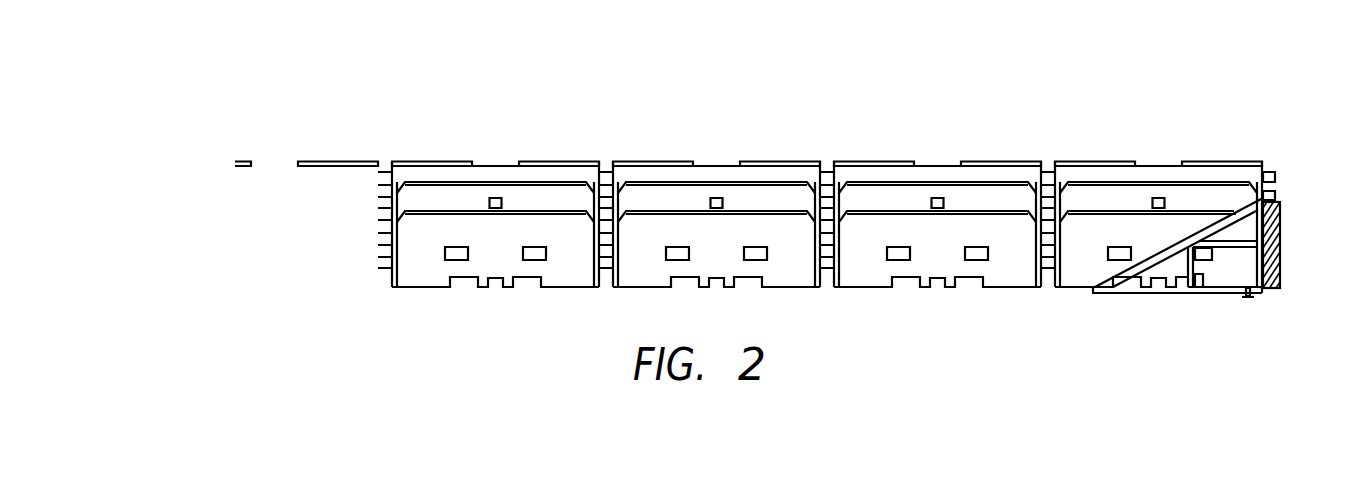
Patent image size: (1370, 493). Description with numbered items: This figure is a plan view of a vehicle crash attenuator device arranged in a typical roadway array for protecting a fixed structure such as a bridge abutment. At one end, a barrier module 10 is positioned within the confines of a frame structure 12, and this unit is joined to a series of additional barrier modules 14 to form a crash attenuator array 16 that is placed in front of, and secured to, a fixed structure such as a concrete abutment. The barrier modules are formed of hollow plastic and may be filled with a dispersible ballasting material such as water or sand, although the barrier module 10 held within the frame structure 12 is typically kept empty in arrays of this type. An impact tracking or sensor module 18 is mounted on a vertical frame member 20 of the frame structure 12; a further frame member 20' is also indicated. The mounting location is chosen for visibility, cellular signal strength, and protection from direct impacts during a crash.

The barrier module 10 is at (1192, 162).
The frame structure 12 is at (1205, 295).
The additional barrier modules 14 is at (310, 160).
The crash attenuator array 16 is at (467, 317).
The sensor module 18 is at (1270, 212).
The vertical frame member 20 is at (1314, 268).
The end cap / seal (second) 20' is at (776, 12).